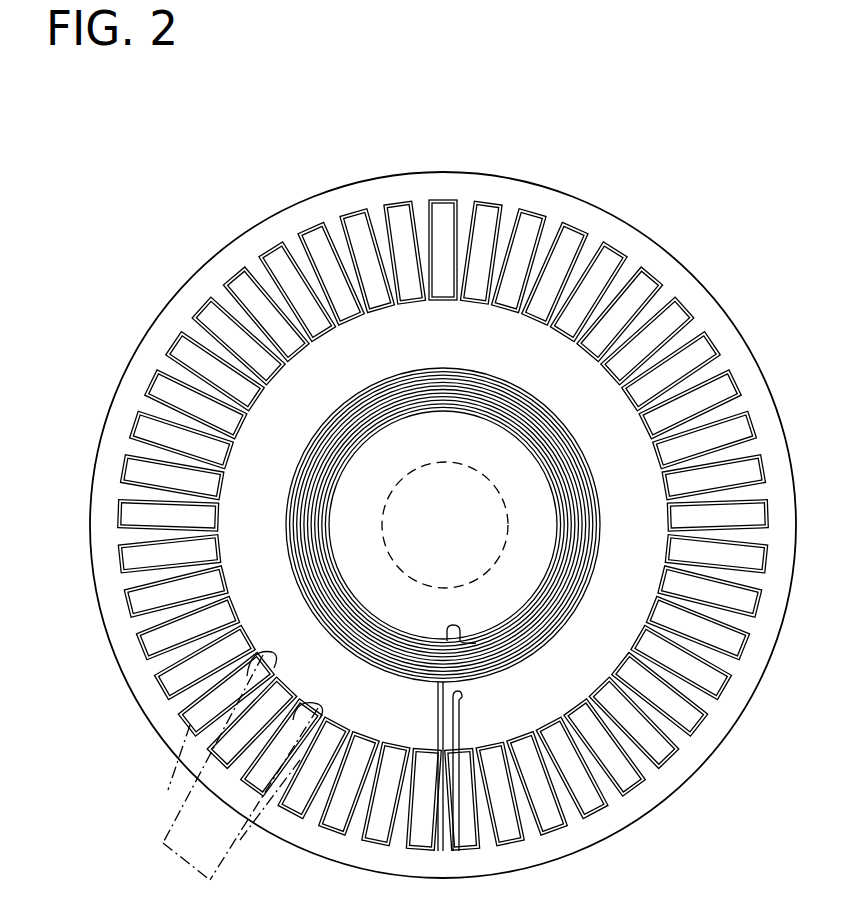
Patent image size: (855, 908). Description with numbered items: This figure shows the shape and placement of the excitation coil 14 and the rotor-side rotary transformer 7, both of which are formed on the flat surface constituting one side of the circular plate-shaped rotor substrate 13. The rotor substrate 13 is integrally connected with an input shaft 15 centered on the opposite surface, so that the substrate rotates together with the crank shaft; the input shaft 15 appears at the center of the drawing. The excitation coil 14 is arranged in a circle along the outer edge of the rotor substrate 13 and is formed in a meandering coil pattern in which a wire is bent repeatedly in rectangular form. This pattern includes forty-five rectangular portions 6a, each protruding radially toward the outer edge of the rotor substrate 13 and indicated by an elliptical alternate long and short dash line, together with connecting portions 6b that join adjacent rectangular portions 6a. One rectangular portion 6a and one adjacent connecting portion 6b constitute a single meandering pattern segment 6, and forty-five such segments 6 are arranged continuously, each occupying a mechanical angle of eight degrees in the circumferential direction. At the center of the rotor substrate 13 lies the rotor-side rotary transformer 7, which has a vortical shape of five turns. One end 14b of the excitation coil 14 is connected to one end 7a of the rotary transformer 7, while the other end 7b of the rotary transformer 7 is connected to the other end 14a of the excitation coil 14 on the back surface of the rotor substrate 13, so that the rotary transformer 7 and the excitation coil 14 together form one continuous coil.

The rotor substrate 13 is at (643, 243).
The excitation coil 14 is at (152, 690).
The rotor-side rotary transformer 7 is at (296, 569).
The one end of the rotor-side rotary transformer 7a is at (441, 686).
The other end of the rotary transformer 7b is at (449, 631).
The other end of the excitation coil 14a is at (466, 697).
The one end of the excitation coil 14b is at (437, 755).
The input shaft 15 is at (488, 468).
The meandering pattern segment 6 is at (210, 878).
The rectangular portion 6a is at (263, 800).
The connecting portion 6b is at (300, 700).